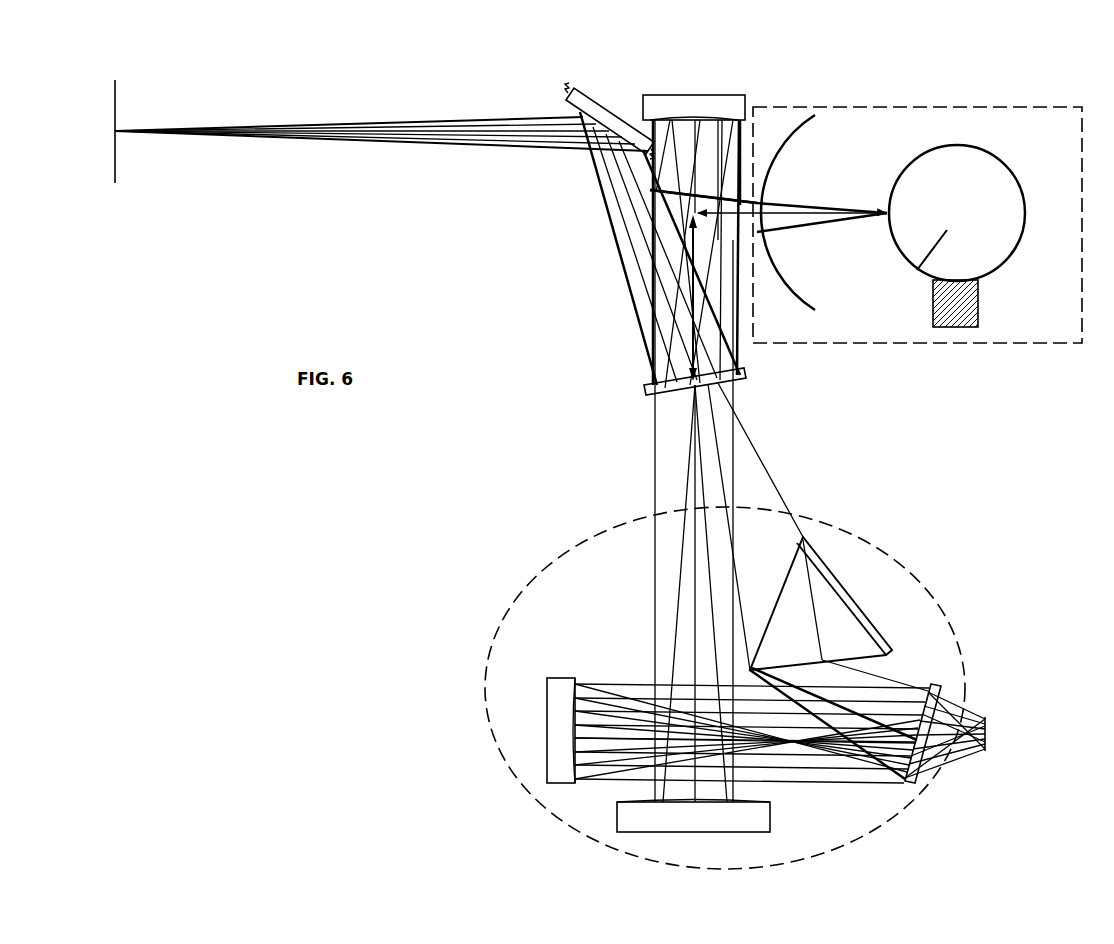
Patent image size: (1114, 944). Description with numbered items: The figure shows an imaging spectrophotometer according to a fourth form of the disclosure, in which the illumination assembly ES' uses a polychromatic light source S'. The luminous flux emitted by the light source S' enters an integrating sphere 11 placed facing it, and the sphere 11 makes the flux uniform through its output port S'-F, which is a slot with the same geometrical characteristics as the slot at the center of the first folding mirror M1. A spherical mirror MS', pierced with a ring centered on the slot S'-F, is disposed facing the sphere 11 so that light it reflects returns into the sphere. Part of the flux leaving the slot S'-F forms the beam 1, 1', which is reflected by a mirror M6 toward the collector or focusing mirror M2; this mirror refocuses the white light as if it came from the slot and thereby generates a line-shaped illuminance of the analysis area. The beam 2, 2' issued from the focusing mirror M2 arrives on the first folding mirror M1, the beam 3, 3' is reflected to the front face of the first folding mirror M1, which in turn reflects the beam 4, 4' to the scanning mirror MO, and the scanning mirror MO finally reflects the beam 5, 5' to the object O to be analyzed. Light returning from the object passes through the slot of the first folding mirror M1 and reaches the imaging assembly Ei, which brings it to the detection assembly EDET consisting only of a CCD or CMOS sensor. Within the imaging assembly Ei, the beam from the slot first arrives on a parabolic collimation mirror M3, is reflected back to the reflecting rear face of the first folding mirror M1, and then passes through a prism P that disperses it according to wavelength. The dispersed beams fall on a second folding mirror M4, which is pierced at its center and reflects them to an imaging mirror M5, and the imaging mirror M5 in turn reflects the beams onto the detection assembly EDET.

The object O is at (108, 104).
The beam 5 is at (349, 100).
The beam 5' is at (381, 166).
The scanning mirror MO is at (596, 98).
The focusing mirror M2 is at (641, 100).
The beam 2' is at (667, 119).
The beam 2 is at (732, 130).
The mirror M6 is at (670, 184).
The illumination assembly ES' is at (917, 199).
The spherical mirror MS' is at (804, 212).
The beam 1 is at (768, 191).
The beam 1' is at (822, 244).
The output port slot S'-F is at (864, 244).
The integrating sphere 11 is at (1029, 248).
The light source S' is at (927, 304).
The beam 3 is at (657, 262).
The beam 4 is at (609, 248).
The beam 4' is at (654, 252).
The beam 3' is at (756, 253).
The first folding mirror M1 is at (641, 392).
The imaging assembly Ei is at (835, 530).
The prism P is at (857, 590).
The second folding mirror M4 is at (946, 702).
The imaging mirror M5 is at (542, 734).
The detection assembly EDET is at (990, 733).
The parabolic collimation mirror M3 is at (778, 818).